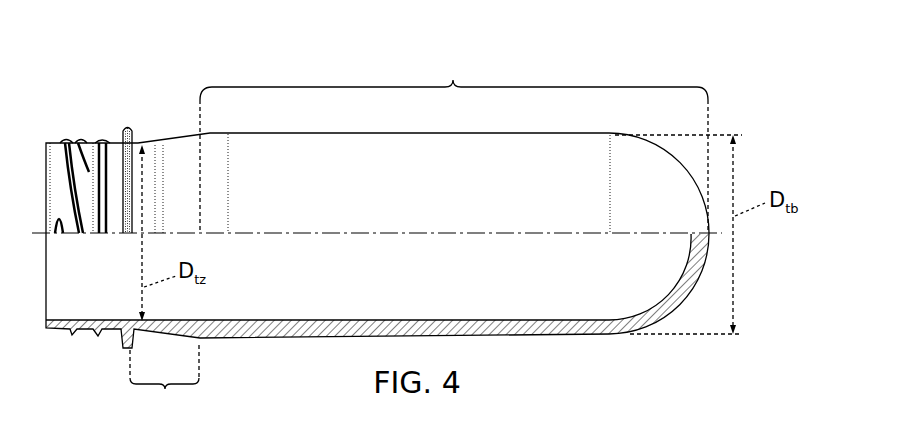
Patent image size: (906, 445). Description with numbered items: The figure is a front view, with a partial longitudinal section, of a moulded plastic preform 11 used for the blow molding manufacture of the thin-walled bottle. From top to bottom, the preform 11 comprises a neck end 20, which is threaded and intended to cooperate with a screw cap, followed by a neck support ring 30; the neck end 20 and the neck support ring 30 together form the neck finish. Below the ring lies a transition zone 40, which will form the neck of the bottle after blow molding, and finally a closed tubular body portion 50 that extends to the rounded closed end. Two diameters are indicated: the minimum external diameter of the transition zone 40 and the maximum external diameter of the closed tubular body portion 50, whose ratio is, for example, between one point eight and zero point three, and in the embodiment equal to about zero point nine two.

The preform 11 is at (496, 342).
The neck end 20 is at (91, 140).
The neck support ring 30 is at (129, 126).
The transition zone 40 is at (164, 378).
The closed tubular body portion 50 is at (454, 144).